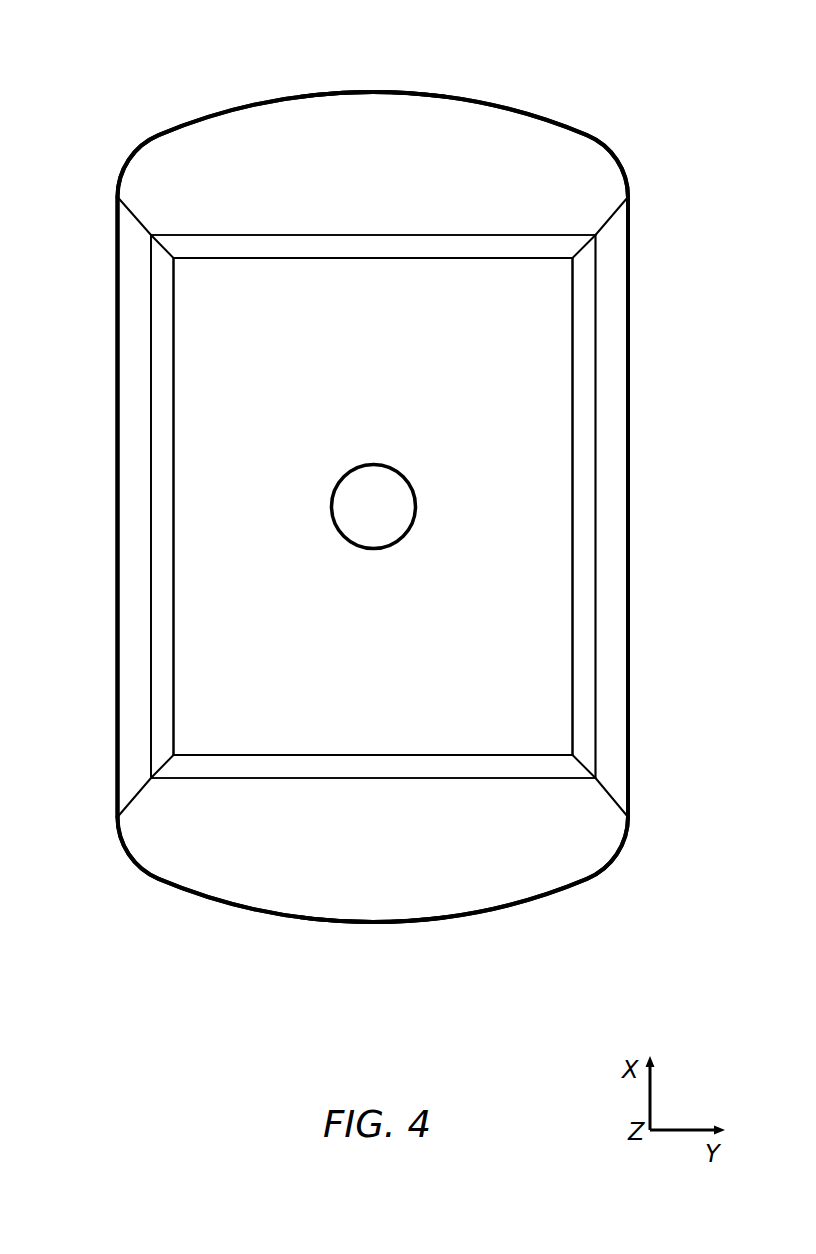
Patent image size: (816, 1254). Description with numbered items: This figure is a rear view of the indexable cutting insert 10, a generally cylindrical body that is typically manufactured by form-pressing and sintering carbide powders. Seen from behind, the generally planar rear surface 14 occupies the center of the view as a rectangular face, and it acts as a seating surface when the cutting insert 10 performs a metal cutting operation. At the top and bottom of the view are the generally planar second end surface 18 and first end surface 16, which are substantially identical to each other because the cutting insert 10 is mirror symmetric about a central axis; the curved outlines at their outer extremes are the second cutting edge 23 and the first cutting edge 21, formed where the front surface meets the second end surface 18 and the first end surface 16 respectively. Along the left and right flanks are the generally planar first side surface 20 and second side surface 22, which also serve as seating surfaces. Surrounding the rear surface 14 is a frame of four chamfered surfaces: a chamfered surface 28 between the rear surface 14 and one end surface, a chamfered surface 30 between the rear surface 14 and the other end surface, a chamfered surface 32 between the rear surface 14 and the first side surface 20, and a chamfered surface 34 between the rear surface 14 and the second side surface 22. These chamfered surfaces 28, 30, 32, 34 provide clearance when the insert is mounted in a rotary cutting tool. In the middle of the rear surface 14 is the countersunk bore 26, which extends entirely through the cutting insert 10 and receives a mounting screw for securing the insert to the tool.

The indexable cutting insert 10 is at (92, 78).
The rear surface 14 is at (529, 656).
The first end surface 16 is at (259, 898).
The second end surface 18 is at (488, 115).
The first side surface 20 is at (128, 437).
The first cutting edge 21 is at (373, 926).
The second side surface 22 is at (619, 437).
The second cutting edge 23 is at (379, 90).
The countersunk bore 26 is at (378, 543).
The chamfered surface 28 is at (285, 236).
The chamfered surface 30 is at (463, 774).
The chamfered surface 32 is at (158, 525).
The chamfered surface 34 is at (589, 525).